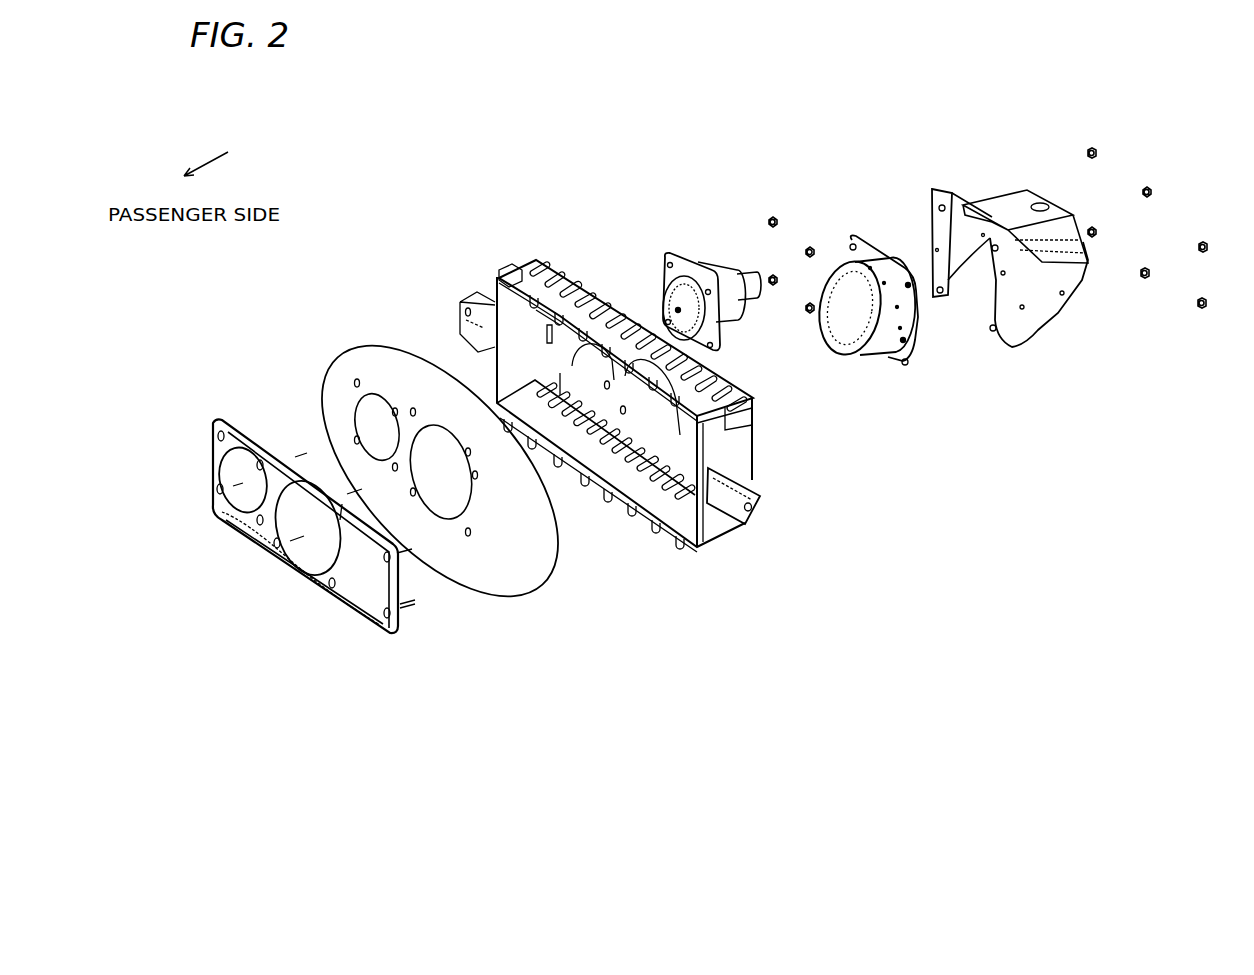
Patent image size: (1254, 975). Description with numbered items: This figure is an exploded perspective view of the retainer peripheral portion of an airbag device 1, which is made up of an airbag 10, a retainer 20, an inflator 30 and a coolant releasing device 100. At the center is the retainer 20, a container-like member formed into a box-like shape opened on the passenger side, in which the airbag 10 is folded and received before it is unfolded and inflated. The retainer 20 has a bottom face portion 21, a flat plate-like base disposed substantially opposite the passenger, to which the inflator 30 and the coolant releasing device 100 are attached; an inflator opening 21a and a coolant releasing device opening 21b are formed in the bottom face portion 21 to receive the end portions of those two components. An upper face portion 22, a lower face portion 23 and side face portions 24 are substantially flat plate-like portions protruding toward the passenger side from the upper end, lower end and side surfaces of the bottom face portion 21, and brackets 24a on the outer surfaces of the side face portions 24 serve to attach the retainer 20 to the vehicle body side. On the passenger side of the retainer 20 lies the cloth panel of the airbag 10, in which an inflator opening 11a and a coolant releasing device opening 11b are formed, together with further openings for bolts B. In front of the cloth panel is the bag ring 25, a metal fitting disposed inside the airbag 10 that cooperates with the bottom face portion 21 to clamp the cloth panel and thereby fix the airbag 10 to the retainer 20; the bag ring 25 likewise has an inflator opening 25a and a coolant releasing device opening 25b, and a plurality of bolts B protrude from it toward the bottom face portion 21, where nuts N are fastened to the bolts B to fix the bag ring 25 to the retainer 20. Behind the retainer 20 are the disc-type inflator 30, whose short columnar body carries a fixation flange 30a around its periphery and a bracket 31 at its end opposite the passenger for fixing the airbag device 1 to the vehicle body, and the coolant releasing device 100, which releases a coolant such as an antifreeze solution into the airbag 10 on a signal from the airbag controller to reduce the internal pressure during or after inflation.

The airbag device 1 is at (378, 192).
The airbag 10 is at (338, 360).
The inflator opening 11a is at (467, 512).
The coolant releasing device opening 11b is at (355, 402).
The retainer 20 is at (665, 412).
The bottom face portion 21 is at (568, 357).
The inflator opening 21a is at (680, 448).
The coolant releasing device opening 21b is at (560, 373).
The upper face portion 22 is at (720, 400).
The lower face portion 23 is at (644, 485).
The side face portions 24 is at (716, 512).
The brackets 24a is at (760, 502).
The bag ring 25 is at (310, 510).
The inflator opening 25a is at (305, 568).
The coolant releasing device opening 25b is at (242, 507).
The inflator 30 is at (889, 363).
The fixation flange 30a is at (893, 358).
The bracket 31 is at (1052, 316).
The coolant releasing device 100 is at (706, 270).
The nuts N is at (1181, 178).
The bolts B is at (407, 607).